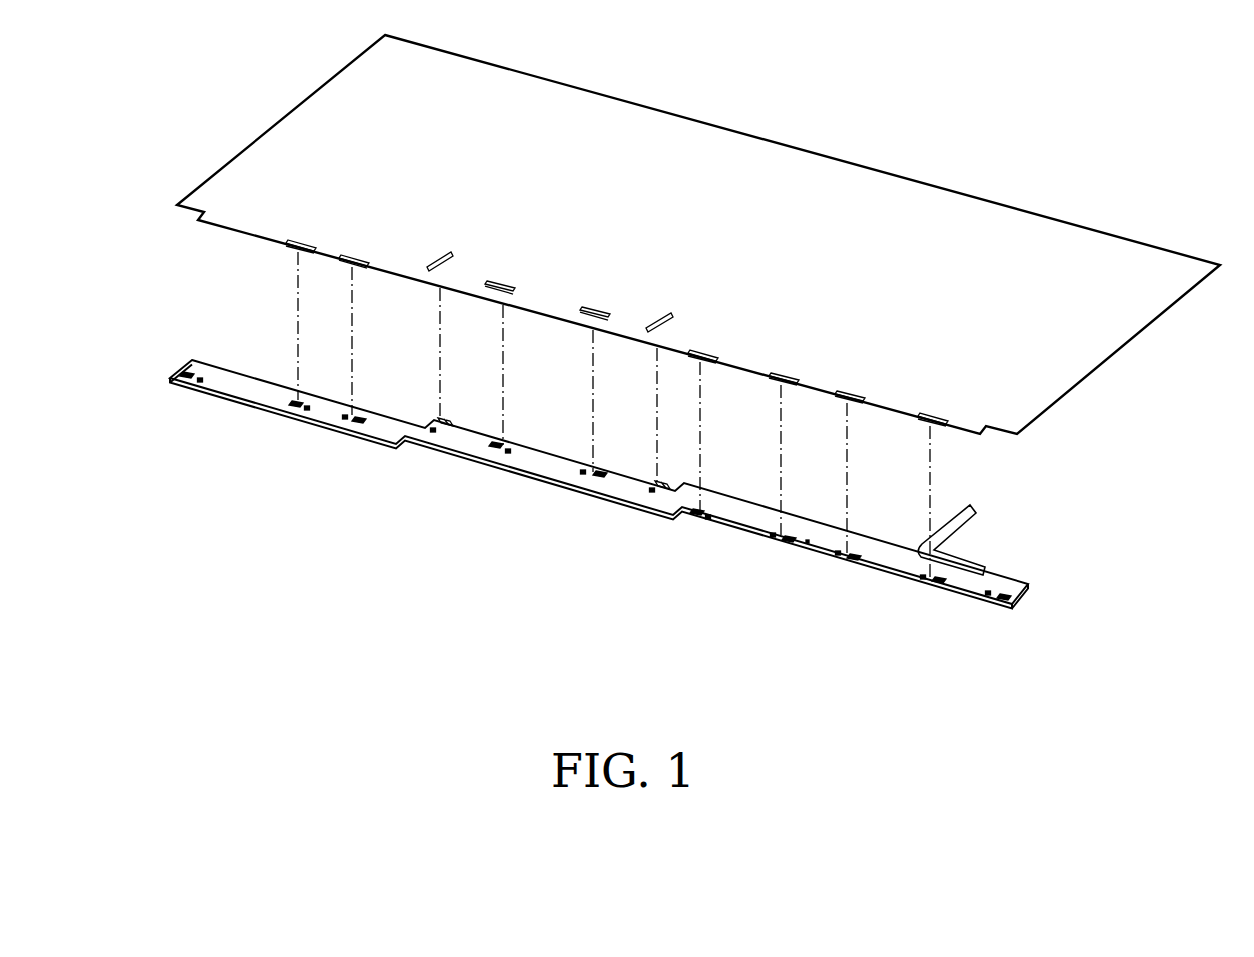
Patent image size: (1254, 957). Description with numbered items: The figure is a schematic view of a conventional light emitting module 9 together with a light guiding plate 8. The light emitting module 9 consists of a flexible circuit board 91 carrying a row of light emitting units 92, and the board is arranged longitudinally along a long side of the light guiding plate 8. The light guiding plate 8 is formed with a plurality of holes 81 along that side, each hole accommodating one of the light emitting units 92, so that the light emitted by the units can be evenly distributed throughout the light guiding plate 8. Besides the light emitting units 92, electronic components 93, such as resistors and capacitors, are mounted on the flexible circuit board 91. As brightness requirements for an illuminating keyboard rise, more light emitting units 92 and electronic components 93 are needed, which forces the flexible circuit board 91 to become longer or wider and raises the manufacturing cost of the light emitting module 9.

The light guiding plate 8 is at (246, 132).
The holes 81 is at (305, 243).
The light emitting module 9 is at (182, 357).
The flexible circuit board 91 is at (1014, 590).
The light emitting units 92 is at (280, 405).
The electronic components 93 is at (297, 412).